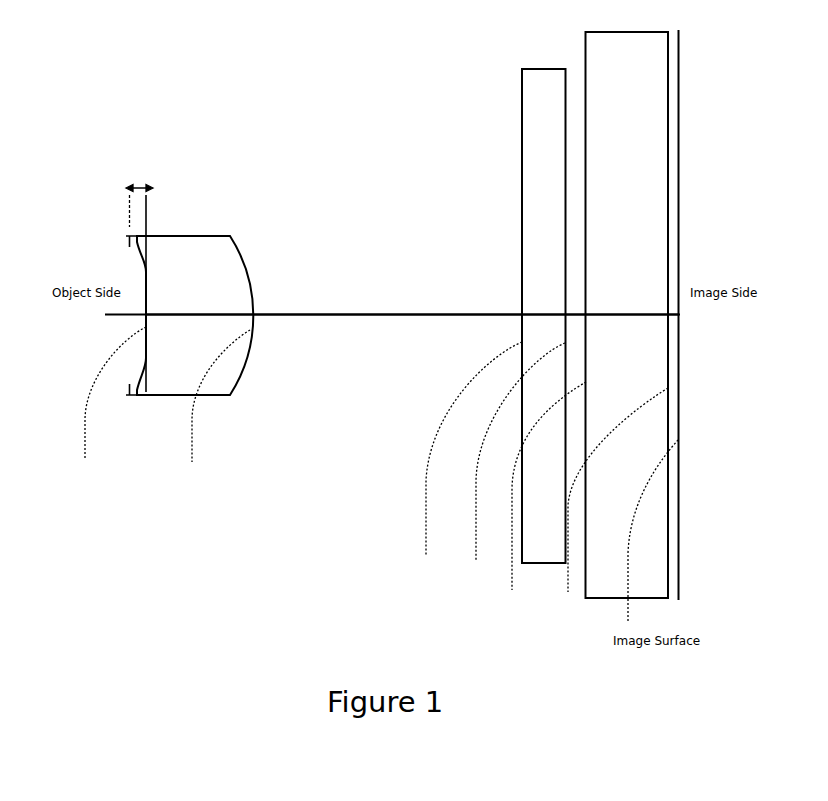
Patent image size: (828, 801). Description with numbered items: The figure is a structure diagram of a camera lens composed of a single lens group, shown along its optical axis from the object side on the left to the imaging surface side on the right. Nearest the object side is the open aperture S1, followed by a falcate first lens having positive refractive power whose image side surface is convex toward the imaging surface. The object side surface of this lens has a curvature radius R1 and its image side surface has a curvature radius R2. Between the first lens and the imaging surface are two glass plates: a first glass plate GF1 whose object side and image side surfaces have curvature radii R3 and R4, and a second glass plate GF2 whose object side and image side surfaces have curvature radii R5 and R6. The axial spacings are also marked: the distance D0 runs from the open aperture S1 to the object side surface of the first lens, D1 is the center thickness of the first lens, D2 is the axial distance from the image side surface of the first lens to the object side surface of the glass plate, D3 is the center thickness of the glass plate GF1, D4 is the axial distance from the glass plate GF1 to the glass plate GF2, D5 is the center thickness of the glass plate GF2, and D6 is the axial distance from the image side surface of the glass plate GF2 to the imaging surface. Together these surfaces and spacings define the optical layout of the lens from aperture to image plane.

The open aperture S1 is at (127, 329).
The axial distance from open aperture to object side surface of the first lens D0 is at (139, 196).
The center thickness of the first lens D1 is at (199, 305).
The axial distance from image side surface of the first lens to object side surface D2 is at (387, 304).
The center thickness of glass plate GF1 D3 is at (543, 303).
The axial distance from glass plate GF1 to glass plate GF2 D4 is at (583, 313).
The center thickness of glass plate GF2 D5 is at (668, 312).
The axial distance from image side surface of glass plate GF2 to imaging surface D6 is at (646, 303).
The glass plate GF1 is at (544, 307).
The glass plate GF2 is at (627, 307).
The curvature radius of the first lens's object side surface R1 is at (110, 410).
The curvature radius of the first lens's image side surface R2 is at (216, 411).
The curvature radius of glass plate GF1's object side surface R3 is at (468, 466).
The curvature radius of glass plate GF1's image side surface R4 is at (514, 466).
The curvature radius of glass plate GF2's object side surface R5 is at (542, 500).
The curvature radius of glass plate GF2's image side surface R6 is at (612, 503).